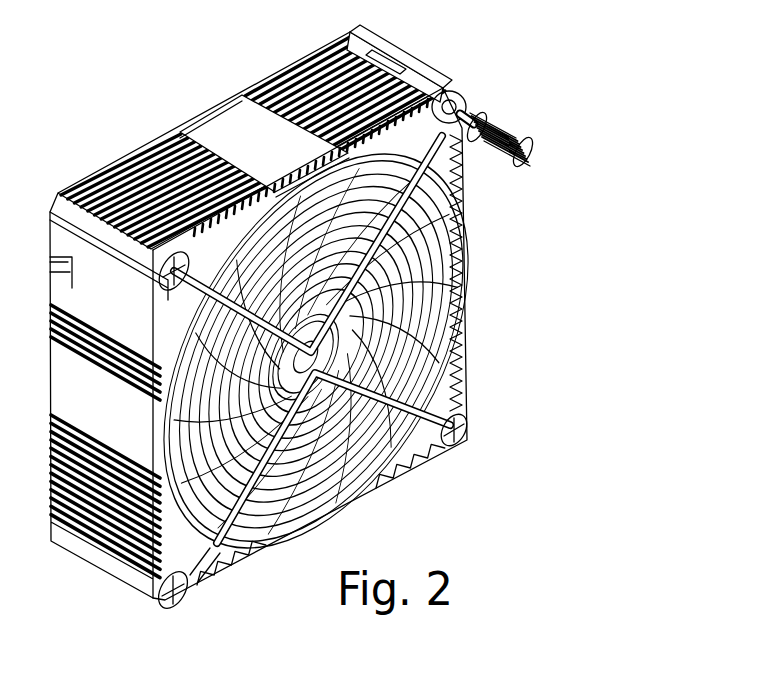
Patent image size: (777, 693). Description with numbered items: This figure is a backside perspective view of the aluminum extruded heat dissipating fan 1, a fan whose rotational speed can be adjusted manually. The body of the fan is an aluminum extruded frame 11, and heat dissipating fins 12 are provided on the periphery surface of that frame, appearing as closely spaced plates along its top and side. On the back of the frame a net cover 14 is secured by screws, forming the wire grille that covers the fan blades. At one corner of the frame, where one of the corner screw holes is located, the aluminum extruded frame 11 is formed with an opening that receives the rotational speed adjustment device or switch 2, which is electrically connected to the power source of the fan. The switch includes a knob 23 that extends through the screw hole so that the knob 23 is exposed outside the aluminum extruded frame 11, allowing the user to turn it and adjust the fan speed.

The aluminum extruded heat dissipating fan 1 is at (247, 315).
The aluminum extruded frame 11 is at (208, 128).
The heat dissipating fins 12 is at (157, 145).
The rotational speed adjustment device or switch 2 is at (442, 96).
The knob 23 is at (500, 123).
The net cover 14 is at (432, 263).